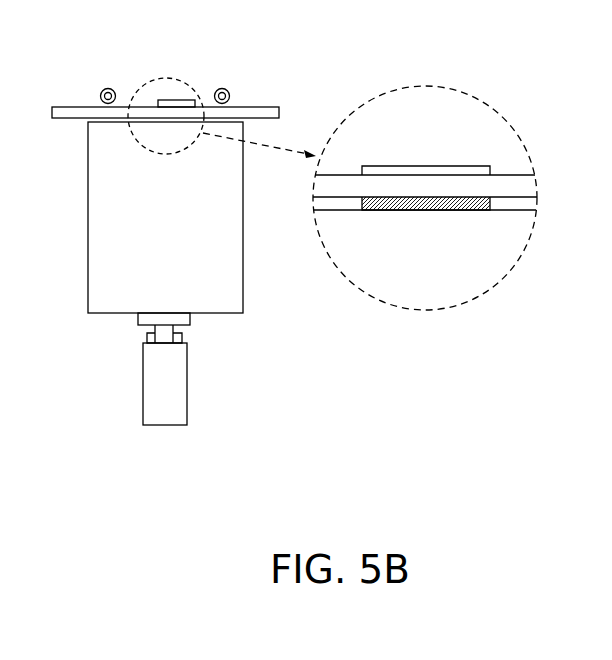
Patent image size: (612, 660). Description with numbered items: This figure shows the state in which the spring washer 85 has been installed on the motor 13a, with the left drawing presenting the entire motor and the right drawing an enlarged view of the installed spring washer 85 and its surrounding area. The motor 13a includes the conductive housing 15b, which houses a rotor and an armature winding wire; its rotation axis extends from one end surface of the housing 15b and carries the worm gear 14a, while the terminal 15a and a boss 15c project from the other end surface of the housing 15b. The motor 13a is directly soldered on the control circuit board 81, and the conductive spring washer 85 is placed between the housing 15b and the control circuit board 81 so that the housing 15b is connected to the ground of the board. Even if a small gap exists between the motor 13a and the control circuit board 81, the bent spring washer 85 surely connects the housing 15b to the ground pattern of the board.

The motor 13a is at (82, 326).
The worm gear 14a is at (160, 425).
The terminal 15a is at (105, 88).
The housing 15b is at (100, 221).
The boss 15c is at (160, 100).
The control circuit board 81 is at (255, 107).
The spring washer 85 is at (448, 208).